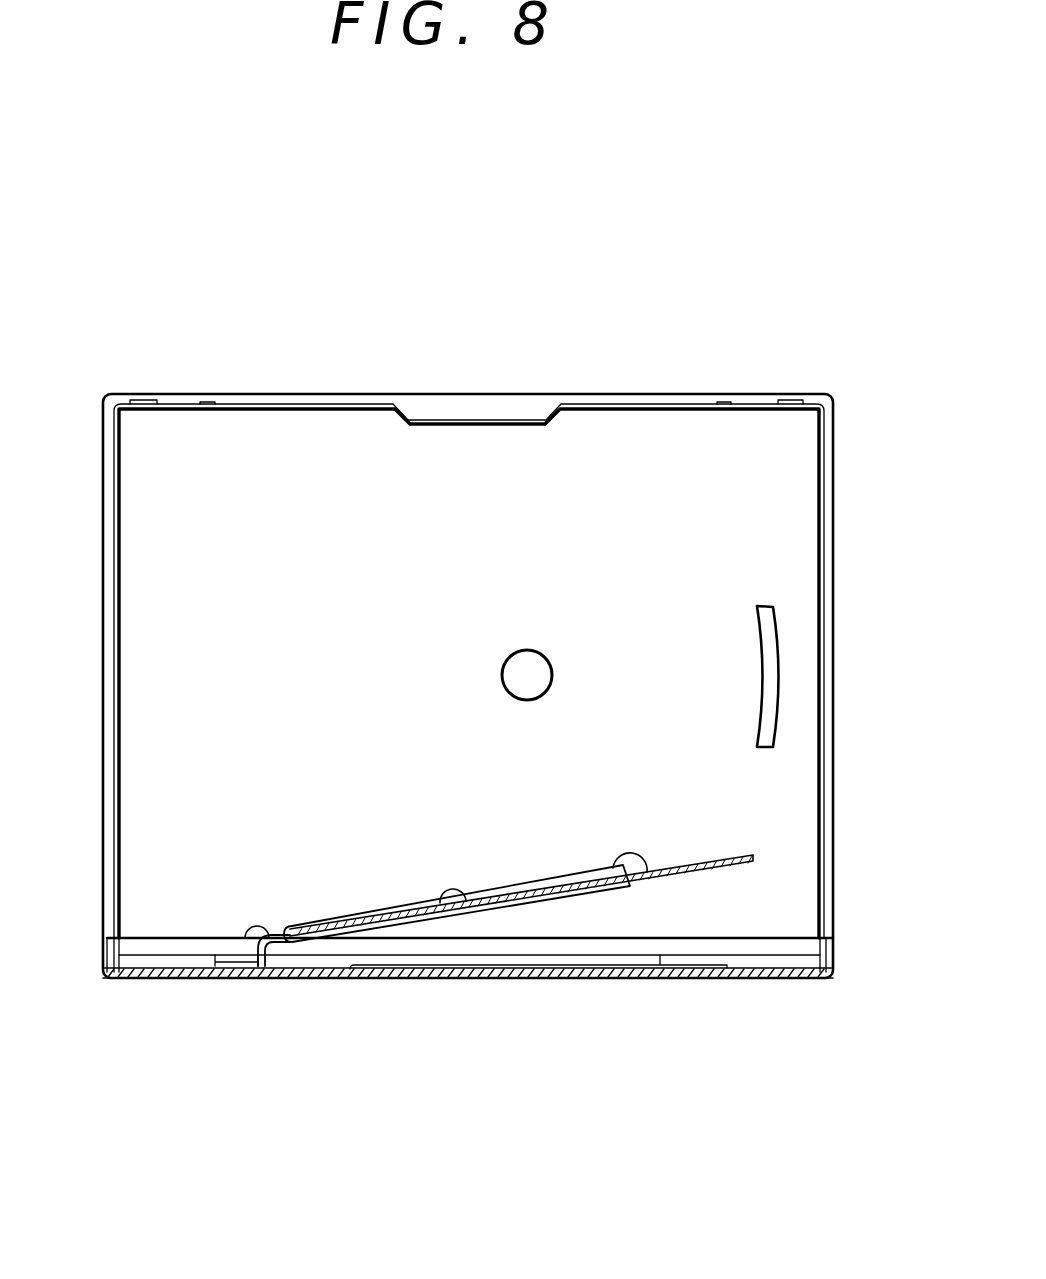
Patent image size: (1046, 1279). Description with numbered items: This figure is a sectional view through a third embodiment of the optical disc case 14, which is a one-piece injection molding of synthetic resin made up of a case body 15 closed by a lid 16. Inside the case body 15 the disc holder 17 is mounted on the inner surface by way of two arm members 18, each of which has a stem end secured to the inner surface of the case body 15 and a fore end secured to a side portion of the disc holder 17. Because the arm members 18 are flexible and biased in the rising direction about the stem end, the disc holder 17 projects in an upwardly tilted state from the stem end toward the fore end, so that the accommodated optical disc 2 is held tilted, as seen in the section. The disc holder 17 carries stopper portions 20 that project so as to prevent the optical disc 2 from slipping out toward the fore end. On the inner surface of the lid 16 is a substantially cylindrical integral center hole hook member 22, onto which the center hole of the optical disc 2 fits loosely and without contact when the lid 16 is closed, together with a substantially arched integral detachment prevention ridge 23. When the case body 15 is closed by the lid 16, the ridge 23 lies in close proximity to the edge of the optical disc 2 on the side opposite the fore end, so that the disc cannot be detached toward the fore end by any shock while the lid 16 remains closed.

The optical disc case 14 is at (687, 368).
The lid 16 is at (248, 448).
The optical disc center hole hook member 22 is at (521, 666).
The optical disc detachment prevention ridge 23 is at (778, 688).
The optical disc 2 is at (752, 845).
The case body 15 is at (101, 958).
The arm members 18 is at (252, 940).
The disc holder 17 is at (459, 902).
The stopper portions 20 is at (648, 880).